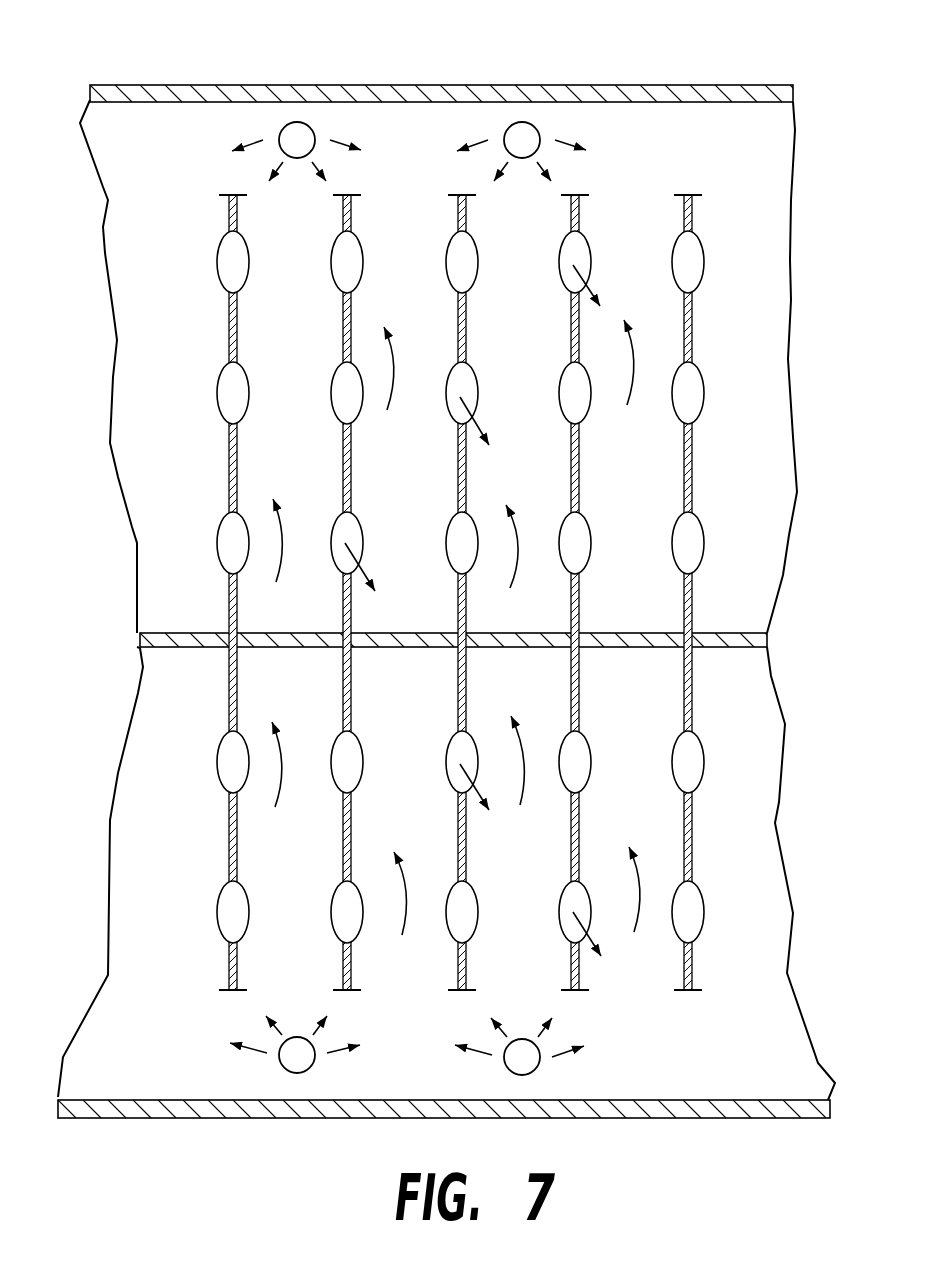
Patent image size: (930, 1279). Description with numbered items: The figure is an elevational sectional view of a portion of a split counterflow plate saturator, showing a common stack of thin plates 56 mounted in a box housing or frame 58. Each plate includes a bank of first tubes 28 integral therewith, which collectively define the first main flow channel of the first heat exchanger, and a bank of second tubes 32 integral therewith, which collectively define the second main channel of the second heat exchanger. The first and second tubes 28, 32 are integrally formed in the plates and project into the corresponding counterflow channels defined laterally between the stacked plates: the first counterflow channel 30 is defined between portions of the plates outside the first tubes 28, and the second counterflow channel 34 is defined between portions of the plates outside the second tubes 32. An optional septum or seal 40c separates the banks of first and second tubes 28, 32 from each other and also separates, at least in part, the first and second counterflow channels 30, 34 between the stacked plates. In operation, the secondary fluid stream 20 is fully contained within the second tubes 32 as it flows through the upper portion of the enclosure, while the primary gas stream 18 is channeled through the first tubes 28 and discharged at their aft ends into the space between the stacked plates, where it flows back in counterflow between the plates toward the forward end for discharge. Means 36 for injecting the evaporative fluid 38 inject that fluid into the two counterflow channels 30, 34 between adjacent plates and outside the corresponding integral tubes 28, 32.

The primary gas stream 18 is at (509, 517).
The secondary fluid stream 20 is at (362, 568).
The first tubes 28 is at (215, 910).
The first counterflow channel 30 is at (310, 867).
The second tubes 32 is at (217, 395).
The second counterflow channel 34 is at (299, 356).
The means for injecting the evaporative fluid 36 is at (314, 124).
The evaporative fluid 38 is at (258, 137).
The septum 40c is at (157, 632).
The plates 56 is at (222, 828).
The frame 58 is at (744, 85).